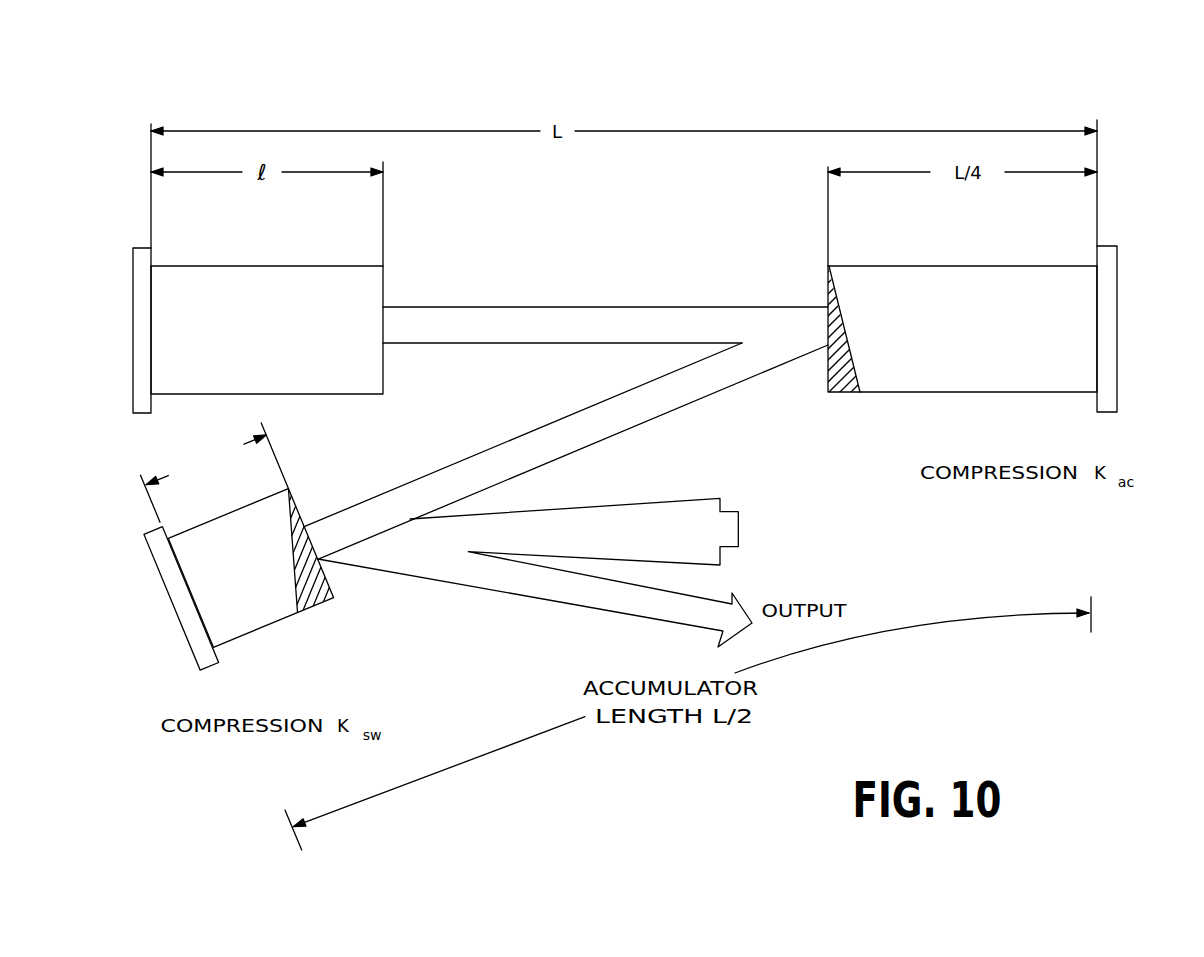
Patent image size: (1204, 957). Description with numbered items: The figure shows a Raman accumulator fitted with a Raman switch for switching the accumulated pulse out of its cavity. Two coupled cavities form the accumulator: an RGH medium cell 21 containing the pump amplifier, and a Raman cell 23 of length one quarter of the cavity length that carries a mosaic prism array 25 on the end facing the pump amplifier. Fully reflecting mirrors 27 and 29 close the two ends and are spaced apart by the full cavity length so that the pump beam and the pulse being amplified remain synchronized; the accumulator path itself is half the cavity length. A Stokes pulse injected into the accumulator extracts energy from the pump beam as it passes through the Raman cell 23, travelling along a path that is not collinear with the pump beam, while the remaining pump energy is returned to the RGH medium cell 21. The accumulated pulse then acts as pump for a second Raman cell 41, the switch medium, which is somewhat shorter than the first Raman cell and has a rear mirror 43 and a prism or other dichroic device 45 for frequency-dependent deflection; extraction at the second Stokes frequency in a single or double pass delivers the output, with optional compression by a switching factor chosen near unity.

The RGH medium cell 21 is at (258, 254).
The Raman cell 23 is at (1034, 403).
The mosaic prism array 25 is at (840, 391).
The fully reflecting mirror 27 is at (133, 333).
The fully reflecting mirror 29 is at (1117, 340).
The second Raman cell 41 is at (270, 643).
The rear mirror 43 is at (172, 600).
The prism or dichroic device 45 is at (334, 597).